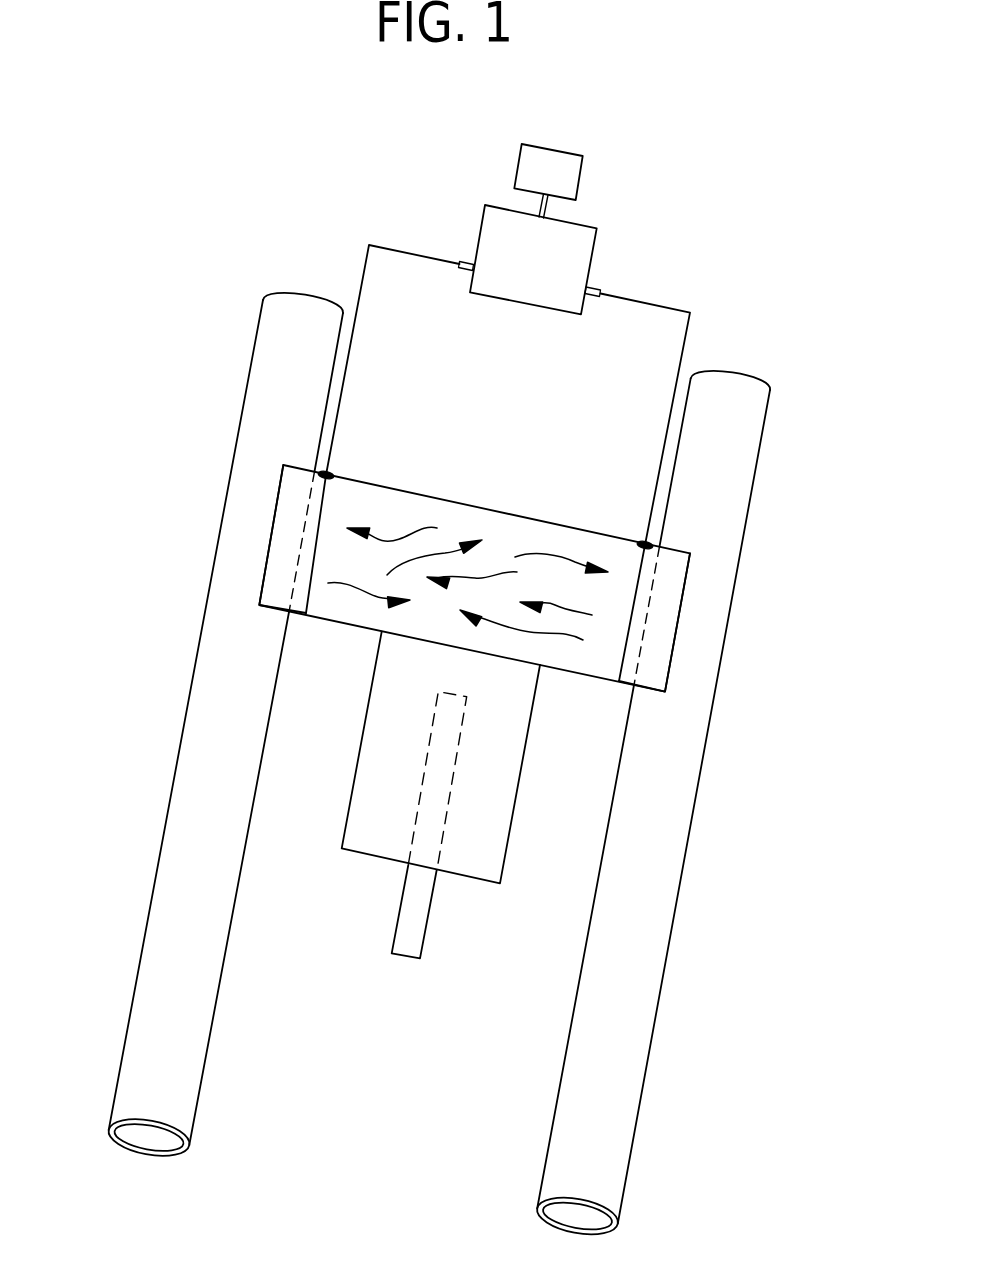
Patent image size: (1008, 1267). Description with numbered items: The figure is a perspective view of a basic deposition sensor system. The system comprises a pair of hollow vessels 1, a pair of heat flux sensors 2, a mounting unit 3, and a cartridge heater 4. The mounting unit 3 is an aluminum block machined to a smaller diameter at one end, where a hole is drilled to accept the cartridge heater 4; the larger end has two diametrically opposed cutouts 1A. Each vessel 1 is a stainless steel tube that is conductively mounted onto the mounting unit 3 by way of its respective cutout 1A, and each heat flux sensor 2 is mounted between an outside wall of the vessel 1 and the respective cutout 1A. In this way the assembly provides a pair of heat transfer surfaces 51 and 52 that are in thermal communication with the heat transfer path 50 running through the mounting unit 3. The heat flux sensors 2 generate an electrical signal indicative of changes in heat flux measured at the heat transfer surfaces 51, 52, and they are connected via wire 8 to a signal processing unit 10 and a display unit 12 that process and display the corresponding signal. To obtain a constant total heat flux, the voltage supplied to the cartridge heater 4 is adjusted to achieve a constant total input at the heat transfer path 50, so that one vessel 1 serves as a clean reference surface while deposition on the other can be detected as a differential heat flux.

The hollow vessel 1 is at (282, 355).
The cutout 1A is at (328, 522).
The heat flux sensor 2 is at (296, 610).
The mounting unit 3 is at (383, 772).
The cartridge heater 4 is at (408, 933).
The wire 8 is at (357, 317).
The signal processing unit 10 is at (597, 245).
The display unit 12 is at (580, 177).
The heat transfer path 50 is at (507, 535).
The heat transfer surface 51 is at (295, 570).
The heat transfer surface 52 is at (642, 652).